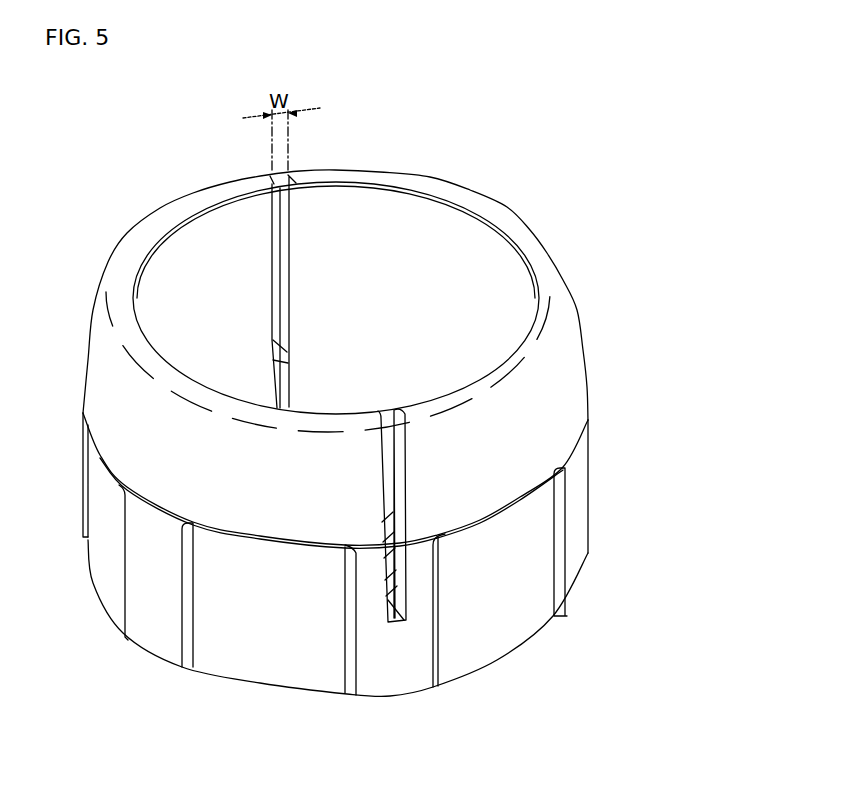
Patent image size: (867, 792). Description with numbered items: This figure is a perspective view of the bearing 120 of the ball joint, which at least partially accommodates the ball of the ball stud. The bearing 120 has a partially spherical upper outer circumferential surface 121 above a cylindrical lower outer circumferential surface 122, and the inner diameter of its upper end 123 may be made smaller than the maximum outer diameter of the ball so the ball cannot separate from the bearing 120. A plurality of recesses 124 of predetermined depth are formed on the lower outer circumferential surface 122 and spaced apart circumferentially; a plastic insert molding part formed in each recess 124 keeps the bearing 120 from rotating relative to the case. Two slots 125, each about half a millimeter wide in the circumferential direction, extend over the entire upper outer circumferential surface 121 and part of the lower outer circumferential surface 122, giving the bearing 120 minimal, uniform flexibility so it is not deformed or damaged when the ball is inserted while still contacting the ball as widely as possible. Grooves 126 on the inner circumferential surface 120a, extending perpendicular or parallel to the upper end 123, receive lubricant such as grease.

The bearing 120 is at (526, 170).
The inner circumferential surface 120a is at (480, 277).
The upper outer circumferential surface 121 is at (573, 357).
The lower outer circumferential surface 122 is at (578, 502).
The upper end 123 is at (427, 187).
The recess 124 is at (262, 648).
The slot 125 is at (296, 234).
The groove 126 is at (302, 380).